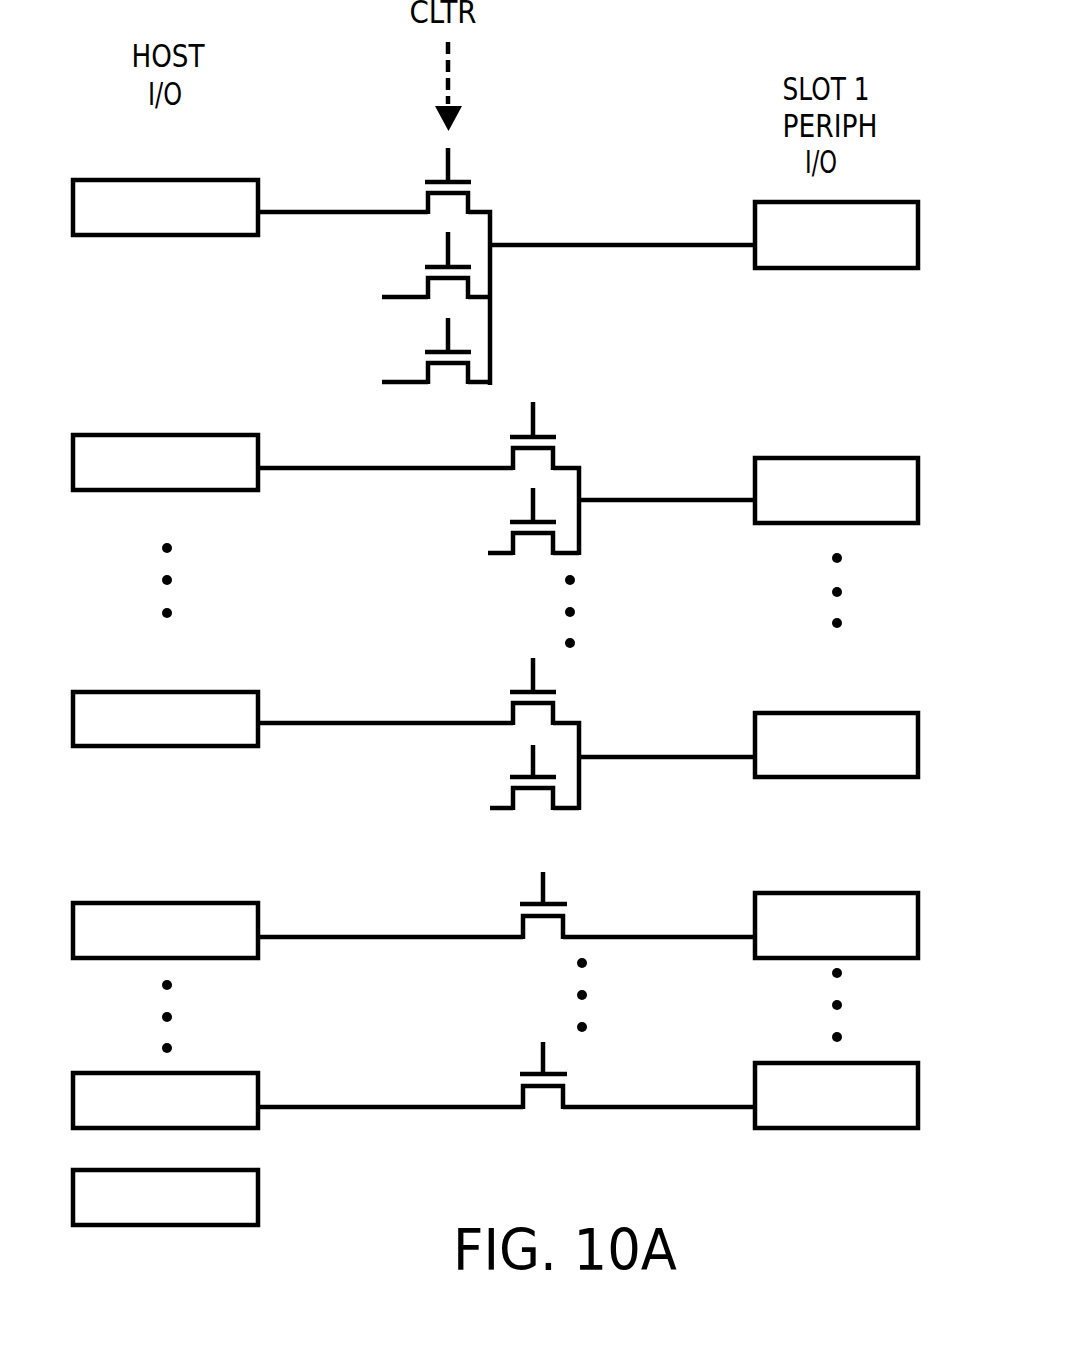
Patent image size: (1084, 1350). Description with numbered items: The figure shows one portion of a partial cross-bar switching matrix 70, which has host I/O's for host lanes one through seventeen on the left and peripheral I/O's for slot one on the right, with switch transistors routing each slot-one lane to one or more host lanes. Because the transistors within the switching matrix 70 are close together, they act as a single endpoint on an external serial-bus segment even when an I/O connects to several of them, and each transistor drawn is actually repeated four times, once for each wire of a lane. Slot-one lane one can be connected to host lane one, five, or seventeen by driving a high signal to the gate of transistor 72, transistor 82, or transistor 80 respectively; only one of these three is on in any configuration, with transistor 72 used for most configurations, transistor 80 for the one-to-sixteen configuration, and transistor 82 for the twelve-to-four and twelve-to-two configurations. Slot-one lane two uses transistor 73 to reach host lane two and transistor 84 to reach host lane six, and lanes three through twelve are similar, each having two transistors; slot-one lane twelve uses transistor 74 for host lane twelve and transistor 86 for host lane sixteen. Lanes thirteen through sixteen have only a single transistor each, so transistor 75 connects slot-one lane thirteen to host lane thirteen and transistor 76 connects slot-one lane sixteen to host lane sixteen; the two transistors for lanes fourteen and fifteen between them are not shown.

The partial cross-bar switching matrix 70 is at (355, 1220).
The transistor 72 is at (478, 204).
The transistor 73 is at (563, 460).
The transistor 74 is at (563, 715).
The transistor 75 is at (573, 928).
The transistor 76 is at (573, 1098).
The transistor 80 is at (439, 350).
The transistor 82 is at (439, 264).
The transistor 84 is at (524, 520).
The transistor 86 is at (524, 776).